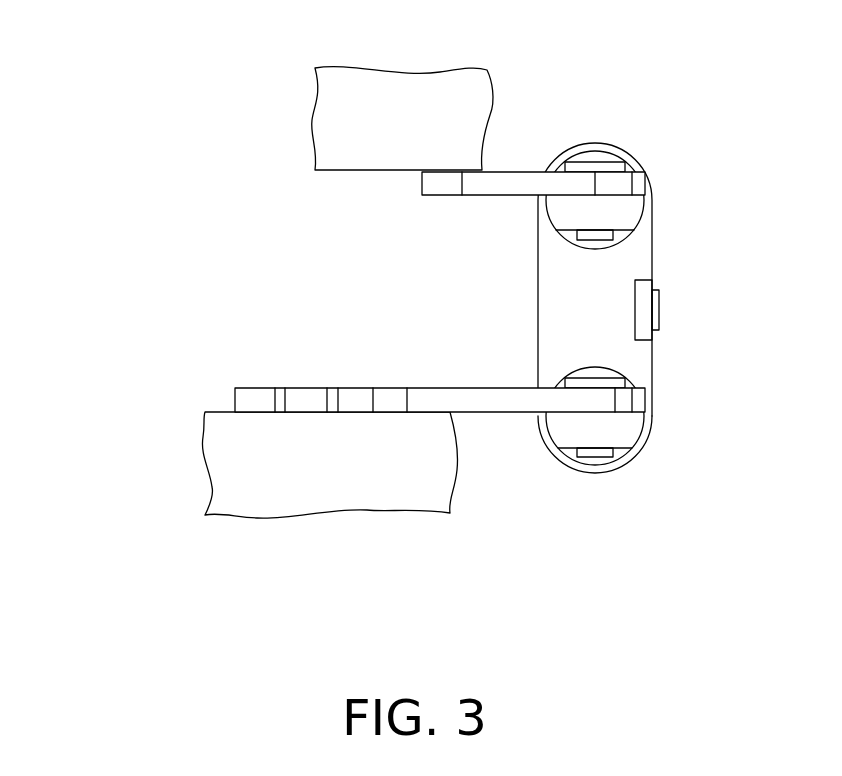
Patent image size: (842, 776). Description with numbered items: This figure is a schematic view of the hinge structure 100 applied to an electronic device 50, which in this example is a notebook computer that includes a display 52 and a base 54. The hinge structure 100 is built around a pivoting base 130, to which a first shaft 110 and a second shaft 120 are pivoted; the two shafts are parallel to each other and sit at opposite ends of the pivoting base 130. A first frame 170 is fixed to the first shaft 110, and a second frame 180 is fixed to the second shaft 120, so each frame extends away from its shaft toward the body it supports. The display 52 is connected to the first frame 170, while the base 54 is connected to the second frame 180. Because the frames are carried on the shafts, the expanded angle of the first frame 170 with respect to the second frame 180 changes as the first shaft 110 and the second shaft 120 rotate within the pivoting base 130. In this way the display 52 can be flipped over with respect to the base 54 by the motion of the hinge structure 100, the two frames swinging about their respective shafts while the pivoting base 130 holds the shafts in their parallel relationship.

The electronic device 50 is at (96, 93).
The display 52 is at (333, 130).
The base 54 is at (217, 440).
The hinge structure 100 is at (632, 100).
The first shaft 110 is at (620, 213).
The second shaft 120 is at (630, 430).
The pivoting base 130 is at (642, 262).
The first frame 170 is at (530, 182).
The second frame 180 is at (518, 398).